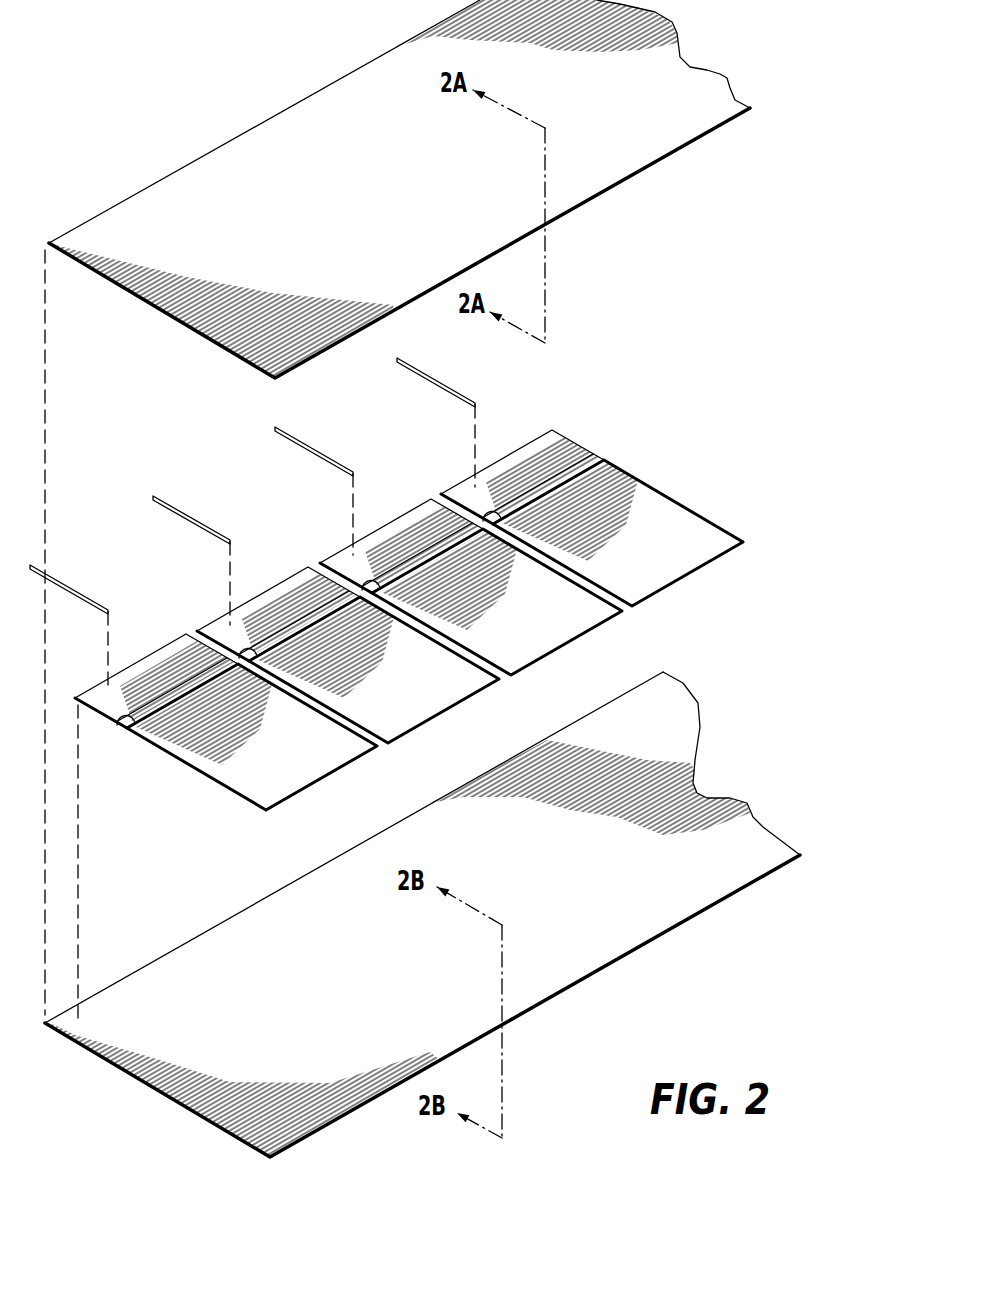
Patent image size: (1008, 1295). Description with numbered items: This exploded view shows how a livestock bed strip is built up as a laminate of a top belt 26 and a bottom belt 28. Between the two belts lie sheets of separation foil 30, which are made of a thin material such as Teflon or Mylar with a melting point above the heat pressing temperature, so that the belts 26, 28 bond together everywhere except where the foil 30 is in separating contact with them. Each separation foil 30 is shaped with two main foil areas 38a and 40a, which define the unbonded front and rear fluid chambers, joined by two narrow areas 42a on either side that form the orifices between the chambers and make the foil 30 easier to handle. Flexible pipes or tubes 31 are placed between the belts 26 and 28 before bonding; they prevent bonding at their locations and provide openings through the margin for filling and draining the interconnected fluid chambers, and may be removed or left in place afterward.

The top belt 26 is at (273, 150).
The bottom belt 28 is at (565, 955).
The separation foil 30 is at (657, 592).
The tube 31 is at (432, 380).
The main foil area 38a is at (339, 579).
The main foil area 40a is at (435, 635).
The connecting area 42a is at (512, 526).